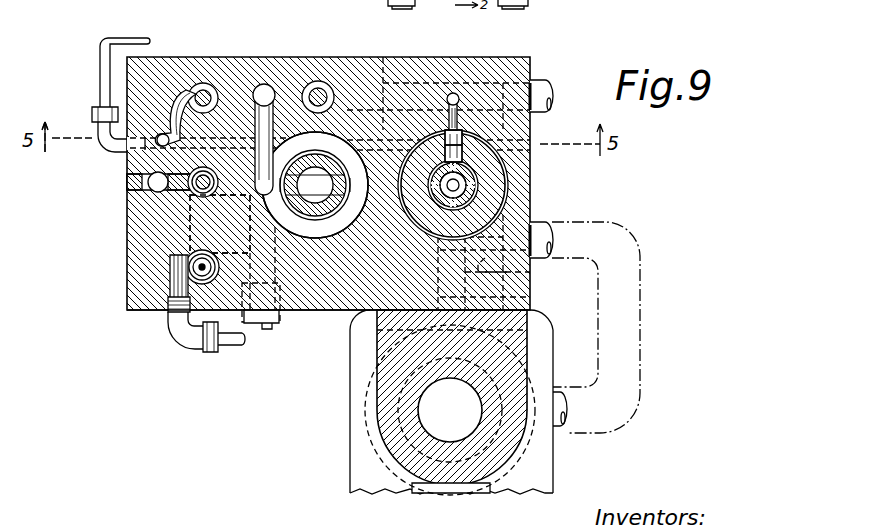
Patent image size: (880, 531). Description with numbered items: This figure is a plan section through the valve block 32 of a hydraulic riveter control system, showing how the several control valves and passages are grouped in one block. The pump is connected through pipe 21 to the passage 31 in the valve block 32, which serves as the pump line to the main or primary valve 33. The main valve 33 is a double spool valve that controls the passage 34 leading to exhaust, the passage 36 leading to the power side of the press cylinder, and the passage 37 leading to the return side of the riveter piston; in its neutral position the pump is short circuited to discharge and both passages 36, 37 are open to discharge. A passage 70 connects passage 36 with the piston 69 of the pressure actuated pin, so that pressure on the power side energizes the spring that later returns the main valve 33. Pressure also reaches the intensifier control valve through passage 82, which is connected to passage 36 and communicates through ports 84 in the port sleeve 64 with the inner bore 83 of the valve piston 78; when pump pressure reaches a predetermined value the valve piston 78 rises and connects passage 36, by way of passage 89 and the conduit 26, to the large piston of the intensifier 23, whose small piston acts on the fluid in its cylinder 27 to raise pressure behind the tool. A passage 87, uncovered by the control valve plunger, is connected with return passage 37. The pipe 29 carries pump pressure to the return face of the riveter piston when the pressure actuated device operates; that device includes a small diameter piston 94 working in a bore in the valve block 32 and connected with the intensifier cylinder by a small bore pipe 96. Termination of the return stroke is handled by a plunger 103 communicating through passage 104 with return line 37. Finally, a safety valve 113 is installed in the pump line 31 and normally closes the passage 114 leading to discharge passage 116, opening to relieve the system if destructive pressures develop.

The pipe 21 is at (266, 323).
The intensifier 23 is at (340, 403).
The pipe 26 is at (547, 233).
The intensifier cylinder 27 is at (450, 410).
The pipe 29 is at (543, 81).
The passage 31 is at (300, 246).
The valve block 32 is at (340, 310).
The main valve 33 is at (315, 185).
The passage 34 is at (264, 84).
The passage 36 is at (388, 58).
The passage 37 is at (299, 60).
The port sleeve 64 is at (465, 142).
The piston 69 is at (320, 95).
The passage 70 is at (315, 185).
The valve piston 78 is at (487, 196).
The passage 82 is at (455, 92).
The inner bore 83 is at (468, 184).
The ports 84 is at (480, 150).
The passage 87 is at (131, 38).
The passage 89 is at (530, 273).
The piston 94 is at (200, 268).
The pipe 96 is at (170, 270).
The plunger 103 is at (205, 92).
The passage 104 is at (163, 133).
The safety valve 113 is at (198, 186).
The passage 114 is at (190, 216).
The discharge passage 116 is at (158, 183).